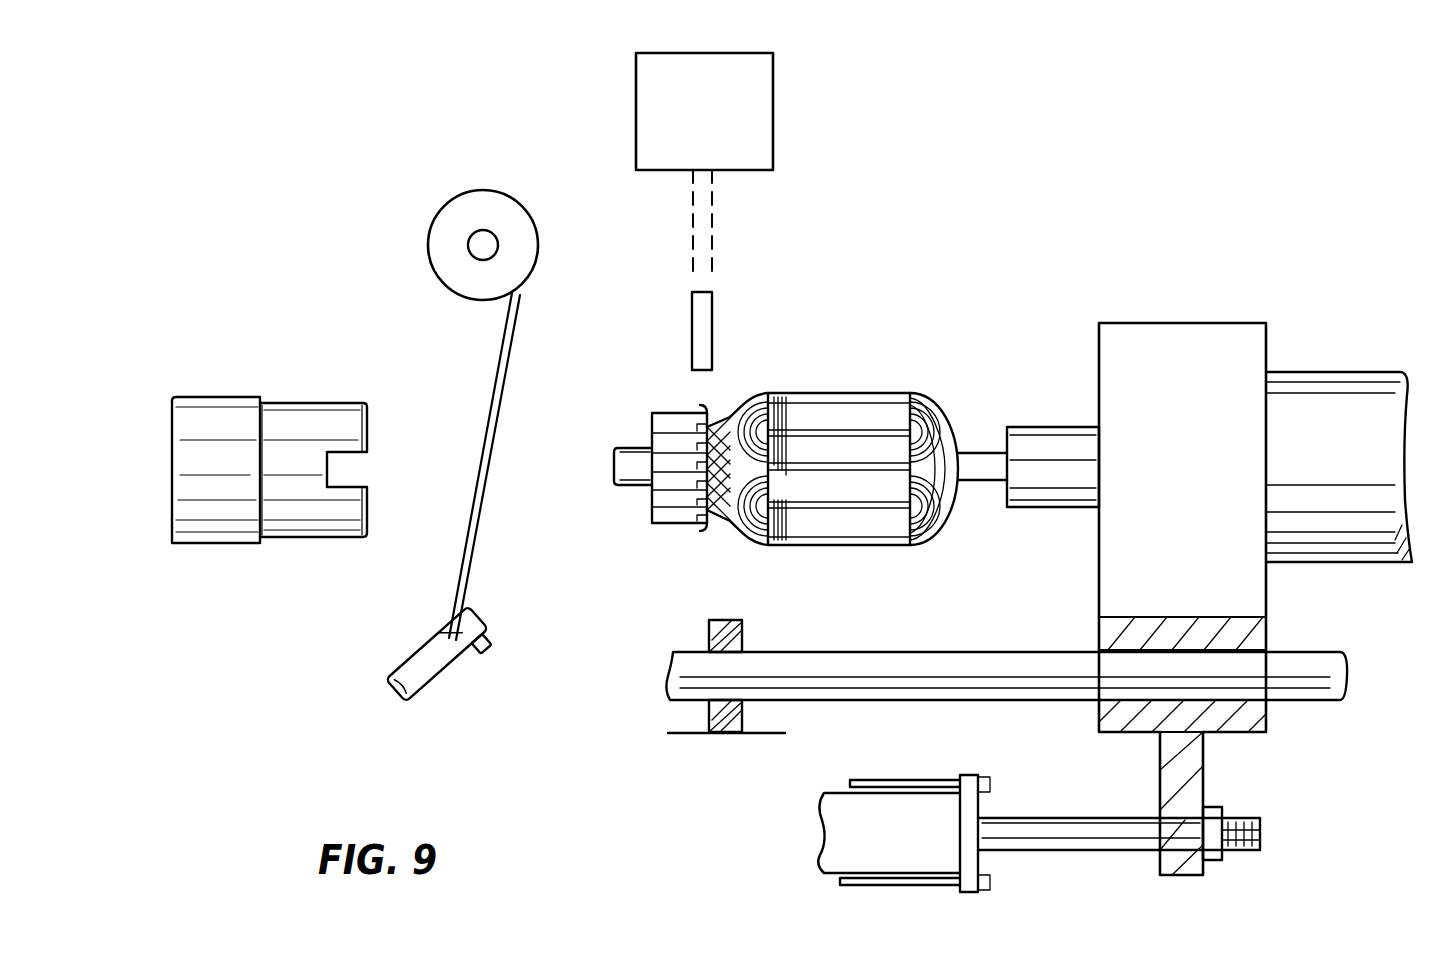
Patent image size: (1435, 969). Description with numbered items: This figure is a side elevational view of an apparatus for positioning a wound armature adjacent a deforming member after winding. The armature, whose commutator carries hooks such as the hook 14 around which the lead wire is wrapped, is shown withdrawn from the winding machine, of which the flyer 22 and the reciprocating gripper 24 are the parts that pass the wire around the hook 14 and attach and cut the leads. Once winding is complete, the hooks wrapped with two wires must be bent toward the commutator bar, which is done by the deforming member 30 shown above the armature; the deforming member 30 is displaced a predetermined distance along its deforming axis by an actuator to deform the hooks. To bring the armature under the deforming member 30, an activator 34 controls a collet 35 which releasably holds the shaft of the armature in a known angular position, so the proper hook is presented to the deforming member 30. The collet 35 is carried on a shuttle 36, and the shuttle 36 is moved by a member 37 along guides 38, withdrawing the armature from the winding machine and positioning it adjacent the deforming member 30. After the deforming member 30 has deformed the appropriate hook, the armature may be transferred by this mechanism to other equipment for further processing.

The hook 14 is at (700, 410).
The flyer 22 is at (452, 207).
The gripper 24 is at (420, 676).
The deforming member 30 is at (712, 328).
The activator 34 is at (1342, 385).
The collet 35 is at (1058, 448).
The shuttle 36 is at (1188, 338).
The member 37 is at (843, 833).
The guides 38 is at (898, 660).